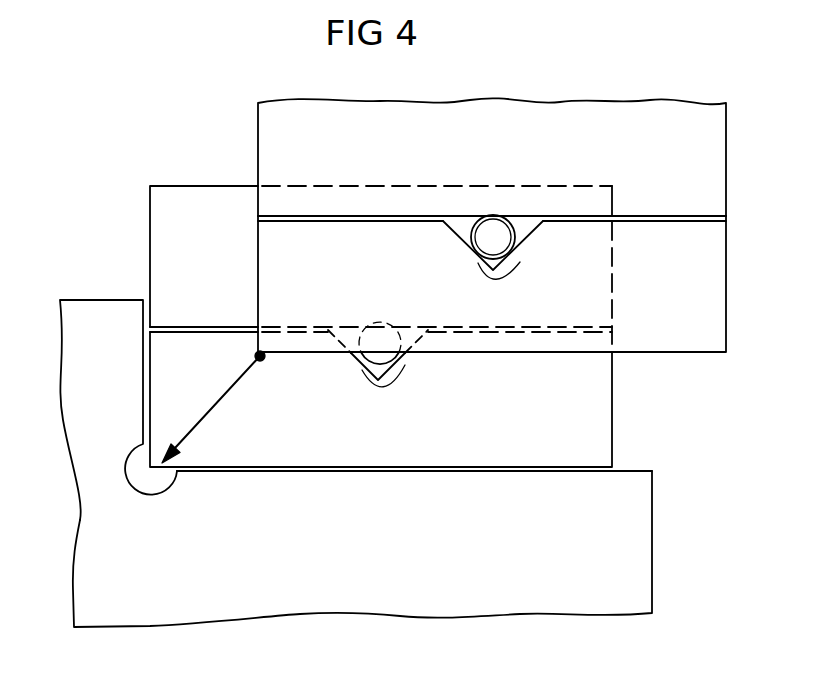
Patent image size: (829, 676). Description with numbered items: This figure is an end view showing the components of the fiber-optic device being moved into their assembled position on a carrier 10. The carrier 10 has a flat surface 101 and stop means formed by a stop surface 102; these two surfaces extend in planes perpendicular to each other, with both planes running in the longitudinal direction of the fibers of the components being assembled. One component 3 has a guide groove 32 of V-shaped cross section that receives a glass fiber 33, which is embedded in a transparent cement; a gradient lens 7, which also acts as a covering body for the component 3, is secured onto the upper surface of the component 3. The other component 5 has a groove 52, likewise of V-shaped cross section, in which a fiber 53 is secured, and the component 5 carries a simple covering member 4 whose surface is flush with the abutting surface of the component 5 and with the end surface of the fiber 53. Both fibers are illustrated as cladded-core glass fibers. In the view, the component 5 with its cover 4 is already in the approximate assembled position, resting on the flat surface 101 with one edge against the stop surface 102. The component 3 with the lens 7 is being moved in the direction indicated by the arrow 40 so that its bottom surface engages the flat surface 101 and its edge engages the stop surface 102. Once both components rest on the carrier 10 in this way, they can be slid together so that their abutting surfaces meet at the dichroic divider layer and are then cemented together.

The gradient lens 7 is at (715, 150).
The component 3 is at (715, 270).
The glass fiber 33 is at (487, 244).
The guide groove 32 is at (510, 251).
The covering member 4 is at (163, 208).
The component 5 is at (598, 381).
The fiber 53 is at (366, 364).
The groove 52 is at (396, 362).
The arrow 40 is at (223, 394).
The stop surface 102 is at (143, 350).
The flat surface 101 is at (633, 468).
The carrier 10 is at (637, 528).